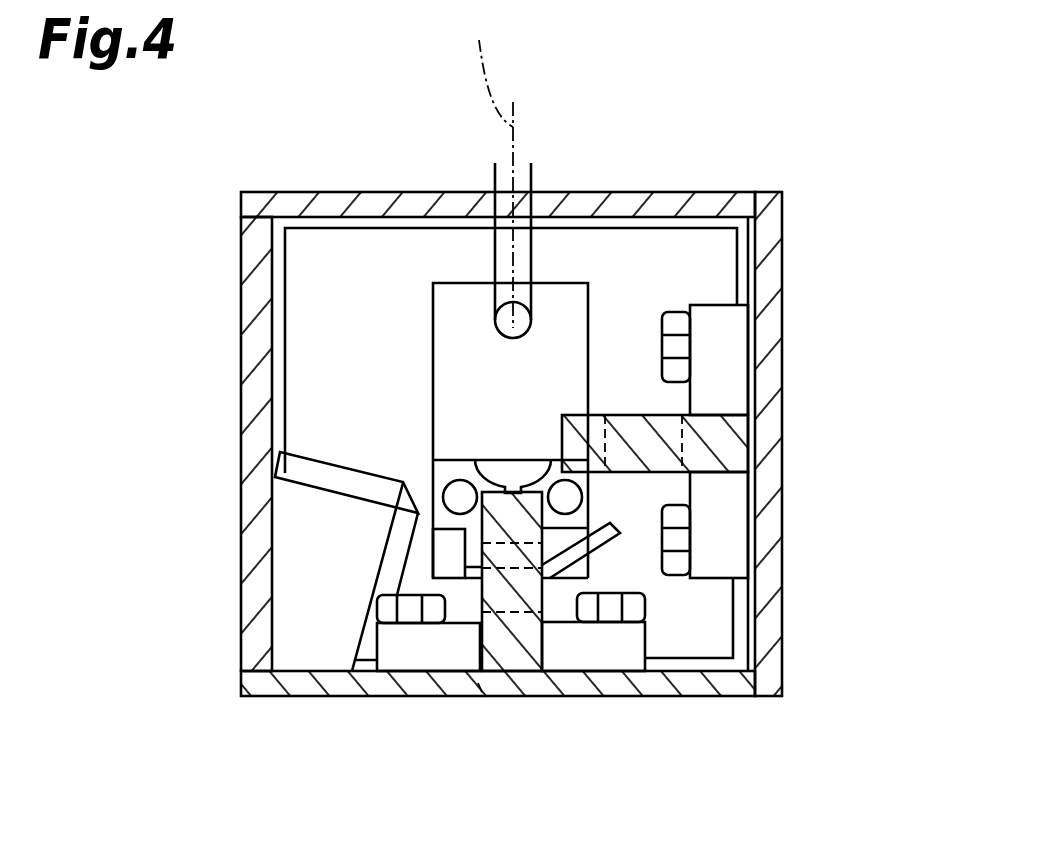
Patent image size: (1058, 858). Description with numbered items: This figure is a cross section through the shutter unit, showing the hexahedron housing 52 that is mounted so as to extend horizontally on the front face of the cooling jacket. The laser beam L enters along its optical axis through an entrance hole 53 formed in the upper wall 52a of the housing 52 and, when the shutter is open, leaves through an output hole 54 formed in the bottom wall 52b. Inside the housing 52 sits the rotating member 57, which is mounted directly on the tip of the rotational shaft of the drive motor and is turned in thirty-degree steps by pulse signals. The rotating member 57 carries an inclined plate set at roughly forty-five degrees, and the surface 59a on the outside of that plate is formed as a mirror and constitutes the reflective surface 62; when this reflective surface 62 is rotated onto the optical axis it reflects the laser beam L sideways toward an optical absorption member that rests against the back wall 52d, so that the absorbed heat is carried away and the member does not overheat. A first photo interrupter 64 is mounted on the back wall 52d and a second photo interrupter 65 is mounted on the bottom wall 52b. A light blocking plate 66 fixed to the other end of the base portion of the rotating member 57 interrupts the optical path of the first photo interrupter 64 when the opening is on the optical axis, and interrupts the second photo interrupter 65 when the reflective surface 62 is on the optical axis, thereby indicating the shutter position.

The housing 52 is at (531, 451).
The upper wall 52a is at (368, 205).
The bottom wall 52b is at (340, 690).
The back wall 52d is at (777, 267).
The entrance hole 53 is at (492, 183).
The output hole 54 is at (482, 690).
The rotating member 57 is at (505, 405).
The surface on the outside of the inclined plate 59a is at (448, 373).
The reflective surface 62 is at (444, 419).
The first photo interrupter 64 is at (717, 413).
The second photo interrupter 65 is at (543, 643).
The light blocking plate 66 is at (612, 538).
The laser beam L is at (533, 172).